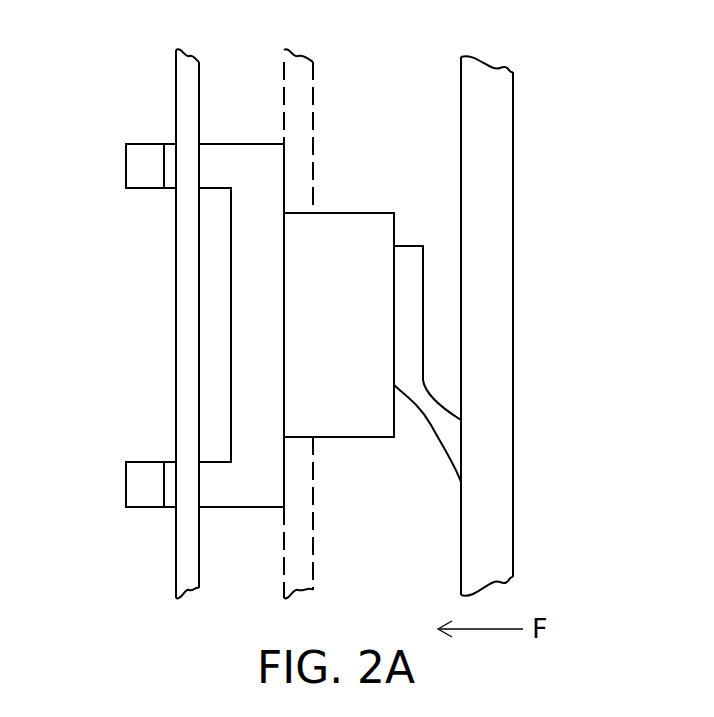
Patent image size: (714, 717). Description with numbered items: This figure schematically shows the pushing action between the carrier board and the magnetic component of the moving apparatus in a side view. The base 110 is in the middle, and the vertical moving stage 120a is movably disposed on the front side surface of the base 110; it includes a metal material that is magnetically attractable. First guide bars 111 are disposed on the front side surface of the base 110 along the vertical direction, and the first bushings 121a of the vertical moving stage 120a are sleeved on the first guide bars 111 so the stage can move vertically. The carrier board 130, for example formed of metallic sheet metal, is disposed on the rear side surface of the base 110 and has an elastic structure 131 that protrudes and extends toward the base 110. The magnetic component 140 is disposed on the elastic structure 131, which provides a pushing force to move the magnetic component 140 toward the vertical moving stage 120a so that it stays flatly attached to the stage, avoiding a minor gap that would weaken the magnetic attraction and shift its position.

The base 110 is at (314, 513).
The first guide bars 111 is at (178, 152).
The vertical moving stage 120a is at (242, 144).
The first bushings 121a is at (151, 492).
The carrier board 130 is at (500, 175).
The elastic structure 131 is at (423, 348).
The magnetic component 140 is at (372, 220).